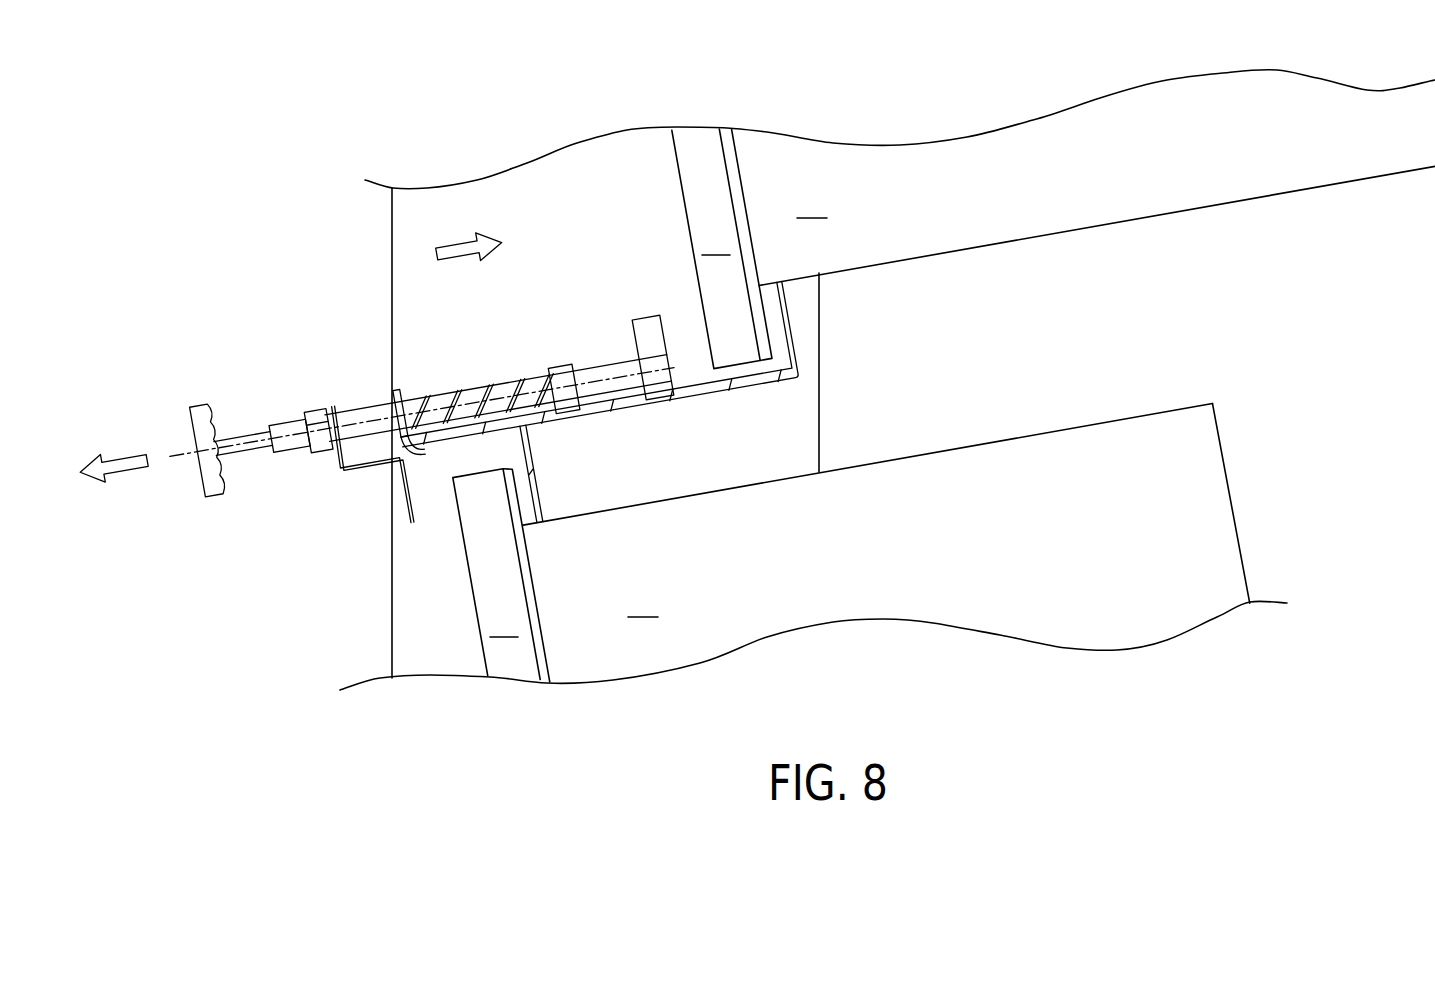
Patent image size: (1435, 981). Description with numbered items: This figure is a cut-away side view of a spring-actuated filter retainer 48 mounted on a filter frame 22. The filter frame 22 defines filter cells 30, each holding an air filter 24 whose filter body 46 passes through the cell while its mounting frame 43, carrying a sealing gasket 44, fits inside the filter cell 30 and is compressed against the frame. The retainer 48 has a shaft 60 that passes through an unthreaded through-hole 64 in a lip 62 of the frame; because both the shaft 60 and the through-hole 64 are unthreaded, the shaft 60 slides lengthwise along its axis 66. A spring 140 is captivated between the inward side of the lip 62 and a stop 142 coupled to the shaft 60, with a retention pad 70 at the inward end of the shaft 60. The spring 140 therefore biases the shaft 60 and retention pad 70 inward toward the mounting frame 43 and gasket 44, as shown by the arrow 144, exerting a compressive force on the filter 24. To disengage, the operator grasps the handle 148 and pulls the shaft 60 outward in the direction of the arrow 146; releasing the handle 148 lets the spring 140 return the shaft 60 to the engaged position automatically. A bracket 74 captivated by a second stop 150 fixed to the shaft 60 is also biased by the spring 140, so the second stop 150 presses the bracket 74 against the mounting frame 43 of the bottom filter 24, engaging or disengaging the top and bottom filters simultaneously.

The filter frame 22 is at (822, 421).
The air filter 24 is at (579, 395).
The filter cell 30 is at (962, 445).
The mounting frame 43 is at (604, 405).
The sealing gasket 44 is at (735, 180).
The filter body 46 is at (830, 688).
The filter retainer 48 is at (416, 440).
The shaft 60 is at (287, 453).
The lip 62 is at (405, 392).
The through-hole 64 is at (406, 447).
The axis 66 is at (176, 458).
The retention pad 70 is at (648, 322).
The bracket 74 is at (333, 407).
The spring 140 is at (493, 383).
The stop 142 is at (562, 372).
The arrow 144 is at (458, 256).
The arrow 146 is at (112, 475).
The handle 148 is at (214, 497).
The second stop 150 is at (317, 417).